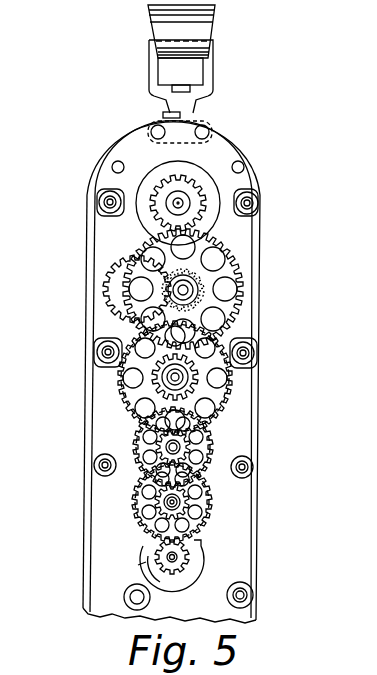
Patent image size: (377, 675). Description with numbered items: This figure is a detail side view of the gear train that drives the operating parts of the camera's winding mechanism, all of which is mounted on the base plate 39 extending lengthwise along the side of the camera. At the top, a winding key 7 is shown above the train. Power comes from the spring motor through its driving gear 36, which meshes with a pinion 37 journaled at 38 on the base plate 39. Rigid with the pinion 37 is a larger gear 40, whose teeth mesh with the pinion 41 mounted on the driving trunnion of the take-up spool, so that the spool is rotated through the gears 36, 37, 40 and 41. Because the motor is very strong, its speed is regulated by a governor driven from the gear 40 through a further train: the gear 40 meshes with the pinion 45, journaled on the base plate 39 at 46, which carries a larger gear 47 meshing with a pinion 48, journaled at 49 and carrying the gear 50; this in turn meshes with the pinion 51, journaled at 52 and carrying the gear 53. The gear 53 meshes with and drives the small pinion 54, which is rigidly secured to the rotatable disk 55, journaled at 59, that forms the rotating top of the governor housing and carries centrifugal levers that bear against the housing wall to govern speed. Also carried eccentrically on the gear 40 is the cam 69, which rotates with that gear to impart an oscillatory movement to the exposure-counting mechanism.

The winding crown 7 is at (193, 33).
The driving gear 36 is at (108, 288).
The pinion 37 is at (196, 276).
The journal 38 is at (200, 292).
The base plate 39 is at (228, 494).
The larger gear 40 is at (213, 245).
The pinion 41 is at (190, 217).
The pinion 45 is at (252, 367).
The journal pin 46 is at (192, 375).
The larger gear 47 is at (215, 400).
The pinion 48 is at (192, 438).
The journal 49 is at (153, 443).
The gear 50 is at (212, 454).
The pinion 51 is at (133, 510).
The journal 52 is at (200, 530).
The gear 53 is at (205, 537).
The small pinion 54 is at (195, 560).
The rotatable disk 55 is at (145, 545).
The journal 59 is at (138, 565).
The cam 69 is at (162, 275).